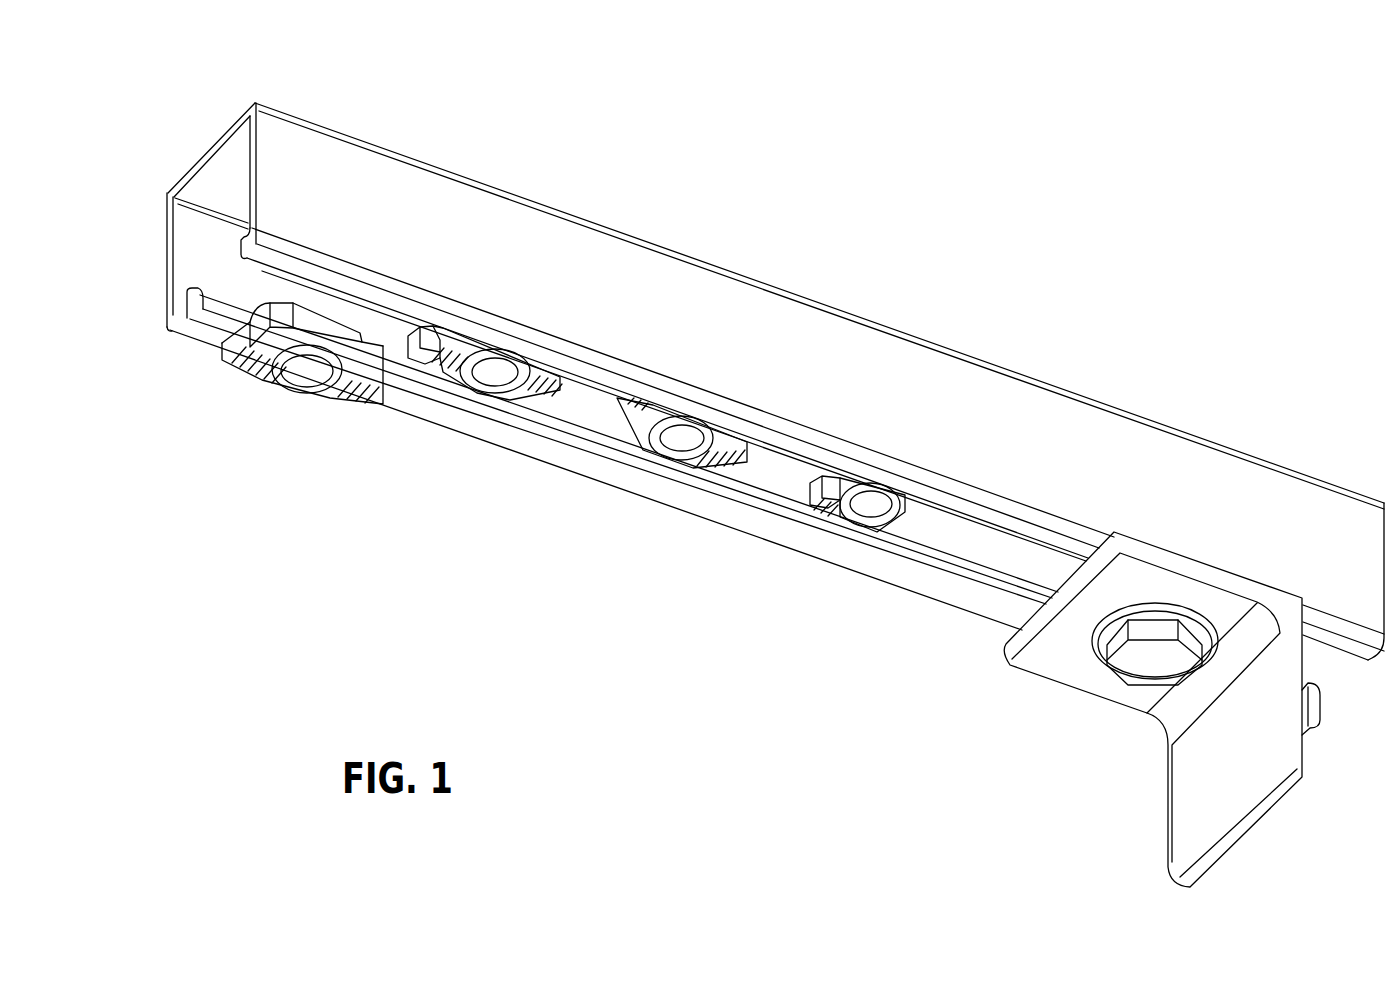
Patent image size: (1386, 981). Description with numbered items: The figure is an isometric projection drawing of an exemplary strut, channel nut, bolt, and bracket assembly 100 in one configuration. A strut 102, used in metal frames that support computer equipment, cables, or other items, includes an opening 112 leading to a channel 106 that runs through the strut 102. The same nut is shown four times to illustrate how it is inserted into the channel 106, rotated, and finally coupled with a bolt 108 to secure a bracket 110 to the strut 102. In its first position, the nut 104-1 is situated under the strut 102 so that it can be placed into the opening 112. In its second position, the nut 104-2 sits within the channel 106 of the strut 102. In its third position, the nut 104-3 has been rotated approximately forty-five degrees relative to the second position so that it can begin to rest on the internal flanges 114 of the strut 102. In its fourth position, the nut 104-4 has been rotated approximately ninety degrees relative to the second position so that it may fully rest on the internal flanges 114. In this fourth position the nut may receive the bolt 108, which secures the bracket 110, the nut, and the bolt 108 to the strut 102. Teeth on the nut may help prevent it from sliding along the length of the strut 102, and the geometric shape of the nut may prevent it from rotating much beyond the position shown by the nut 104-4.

The channel mounting assembly 100 is at (1140, 145).
The strut 102 is at (452, 200).
The nut in first position 104-1 is at (268, 378).
The nut in second position 104-2 is at (480, 390).
The nut in third position 104-3 is at (633, 443).
The nut in fourth position 104-4 is at (827, 508).
The channel 106 is at (215, 232).
The bolt 108 is at (1138, 657).
The bracket 110 is at (1176, 790).
The opening 112 is at (998, 545).
The internal flanges 114 is at (240, 252).